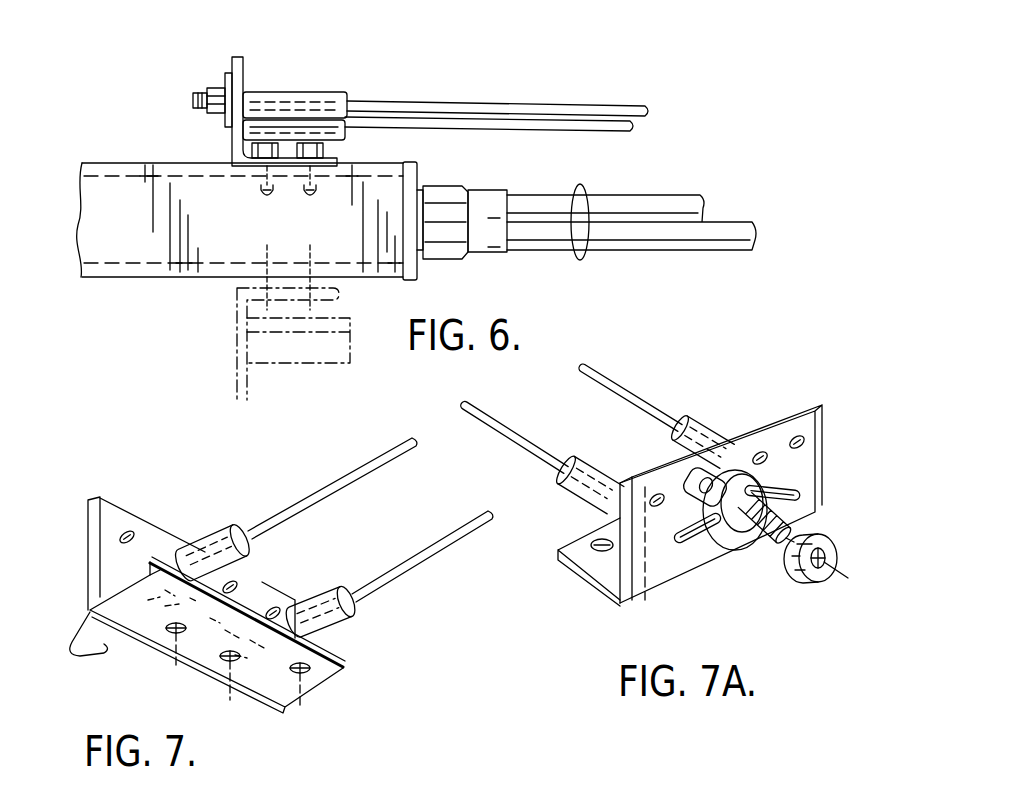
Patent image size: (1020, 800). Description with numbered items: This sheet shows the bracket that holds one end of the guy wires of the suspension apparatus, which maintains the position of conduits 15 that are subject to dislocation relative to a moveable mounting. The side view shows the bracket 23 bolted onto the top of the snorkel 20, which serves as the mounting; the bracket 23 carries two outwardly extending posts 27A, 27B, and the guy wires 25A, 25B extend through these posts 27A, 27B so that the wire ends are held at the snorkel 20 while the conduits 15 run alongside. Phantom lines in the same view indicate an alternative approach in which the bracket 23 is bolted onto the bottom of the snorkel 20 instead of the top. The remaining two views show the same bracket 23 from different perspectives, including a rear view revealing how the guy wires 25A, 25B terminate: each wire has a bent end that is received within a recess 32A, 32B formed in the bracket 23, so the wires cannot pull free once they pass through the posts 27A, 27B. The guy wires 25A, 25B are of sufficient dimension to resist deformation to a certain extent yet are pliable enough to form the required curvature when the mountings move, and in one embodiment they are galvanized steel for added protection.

In FIG. 6, the conduits 15 is at (583, 257).
In FIG. 6, the snorkel 20 is at (238, 236).
In FIG. 6, the bracket 23 is at (236, 146).
In FIG. 7, the bracket 23 is at (201, 650).
In FIG. 6, the guy wire 25A is at (620, 106).
In FIG. 7, the guy wire 25A is at (328, 493).
In FIG. 7A, the guy wire 25A is at (636, 394).
In FIG. 6, the guy wire 25B is at (632, 128).
In FIG. 7, the guy wire 25B is at (417, 558).
In FIG. 7A, the guy wire 25B is at (532, 447).
In FIG. 6, the post 27A is at (297, 96).
In FIG. 7, the post 27A is at (215, 546).
In FIG. 7A, the post 27A is at (700, 427).
In FIG. 6, the post 27B is at (336, 127).
In FIG. 7, the post 27B is at (312, 604).
In FIG. 7A, the post 27B is at (578, 489).
In FIG. 7A, the recess 32A is at (798, 494).
In FIG. 7A, the recess 32B is at (684, 547).